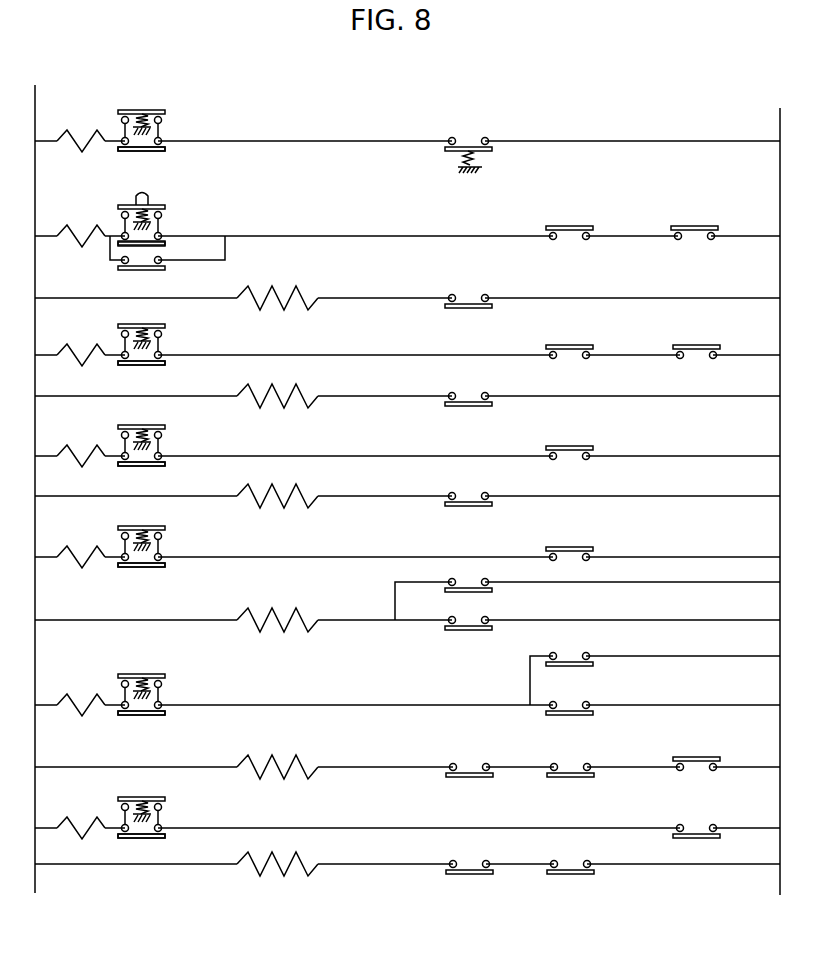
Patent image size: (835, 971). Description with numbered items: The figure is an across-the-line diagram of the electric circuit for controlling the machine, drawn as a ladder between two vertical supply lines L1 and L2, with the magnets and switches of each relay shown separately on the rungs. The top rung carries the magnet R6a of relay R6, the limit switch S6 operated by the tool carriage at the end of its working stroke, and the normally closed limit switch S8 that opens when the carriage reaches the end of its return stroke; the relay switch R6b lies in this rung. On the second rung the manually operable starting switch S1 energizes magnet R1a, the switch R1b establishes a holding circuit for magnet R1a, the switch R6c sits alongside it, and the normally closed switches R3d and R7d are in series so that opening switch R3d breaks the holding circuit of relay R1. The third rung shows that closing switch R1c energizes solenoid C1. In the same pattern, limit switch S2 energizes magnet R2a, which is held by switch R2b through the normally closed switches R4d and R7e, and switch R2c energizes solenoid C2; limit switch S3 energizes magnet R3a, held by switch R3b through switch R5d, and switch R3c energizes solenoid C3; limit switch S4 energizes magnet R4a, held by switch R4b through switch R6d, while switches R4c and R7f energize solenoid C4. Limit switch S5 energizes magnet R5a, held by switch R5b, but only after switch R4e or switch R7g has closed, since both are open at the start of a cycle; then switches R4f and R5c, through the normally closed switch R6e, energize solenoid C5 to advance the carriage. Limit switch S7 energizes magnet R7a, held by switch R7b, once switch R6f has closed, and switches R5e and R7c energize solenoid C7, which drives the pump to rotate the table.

The first power line L1 is at (35, 107).
The second power line L2 is at (780, 118).
The machine operated limit switch S6 is at (141, 120).
The manually operable starting switch S1 is at (145, 214).
The machine operated limit switch S2 is at (141, 334).
The machine operated limit switch S3 is at (141, 435).
The machine operated limit switch S4 is at (141, 536).
The machine operated limit switch S5 is at (141, 684).
The machine operated limit switch S7 is at (141, 807).
The normally closed limit switch S8 is at (447, 148).
The magnet of relay R6 R6a is at (70, 150).
The switch of relay R6 R6b is at (133, 152).
The magnet of relay R1 R1a is at (80, 222).
The switch of relay R1 R1b is at (161, 246).
The switch of relay R6 R6c is at (123, 270).
The switch of relay R3 R3d is at (569, 221).
The switch of relay R7 R7d is at (694, 221).
The solenoid C1 is at (277, 291).
The switch of relay R1 R1c is at (450, 308).
The magnet of relay R2 R2a is at (80, 341).
The switch of relay R2 R2b is at (133, 366).
The switch of relay R4 R4d is at (569, 340).
The switch of relay R7 R7e is at (696, 340).
The solenoid C2 is at (277, 389).
The switch of relay R2 R2c is at (450, 406).
The magnet of relay R3 R3a is at (80, 442).
The switch of relay R3 R3b is at (133, 467).
The switch of relay R5 R5d is at (569, 441).
The solenoid C3 is at (277, 489).
The switch of relay R3 R3c is at (450, 506).
The magnet of relay R4 R4a is at (80, 543).
The switch of relay R4 R4b is at (133, 568).
The switch of relay R6 R6d is at (569, 542).
The solenoid C4 is at (277, 613).
The switch of relay R7 R7f is at (476, 592).
The switch of relay R4 R4c is at (450, 630).
The magnet of relay R5 R5a is at (80, 691).
The switch of relay R5 R5b is at (133, 716).
The switch of relay R7 R7g is at (565, 666).
The switch of relay R4 R4e is at (565, 715).
The solenoid C5 is at (277, 760).
The switch of relay R4 R4f is at (465, 777).
The switch of relay R5 R5c is at (570, 777).
The switch of relay R6 R6e is at (696, 752).
The magnet of relay R7 R7a is at (80, 814).
The switch of relay R7 R7b is at (133, 839).
The solenoid C7 is at (277, 857).
The switch of relay R6 R6f is at (690, 838).
The switch of relay R5 R5e is at (465, 874).
The switch of relay R7 R7c is at (566, 874).